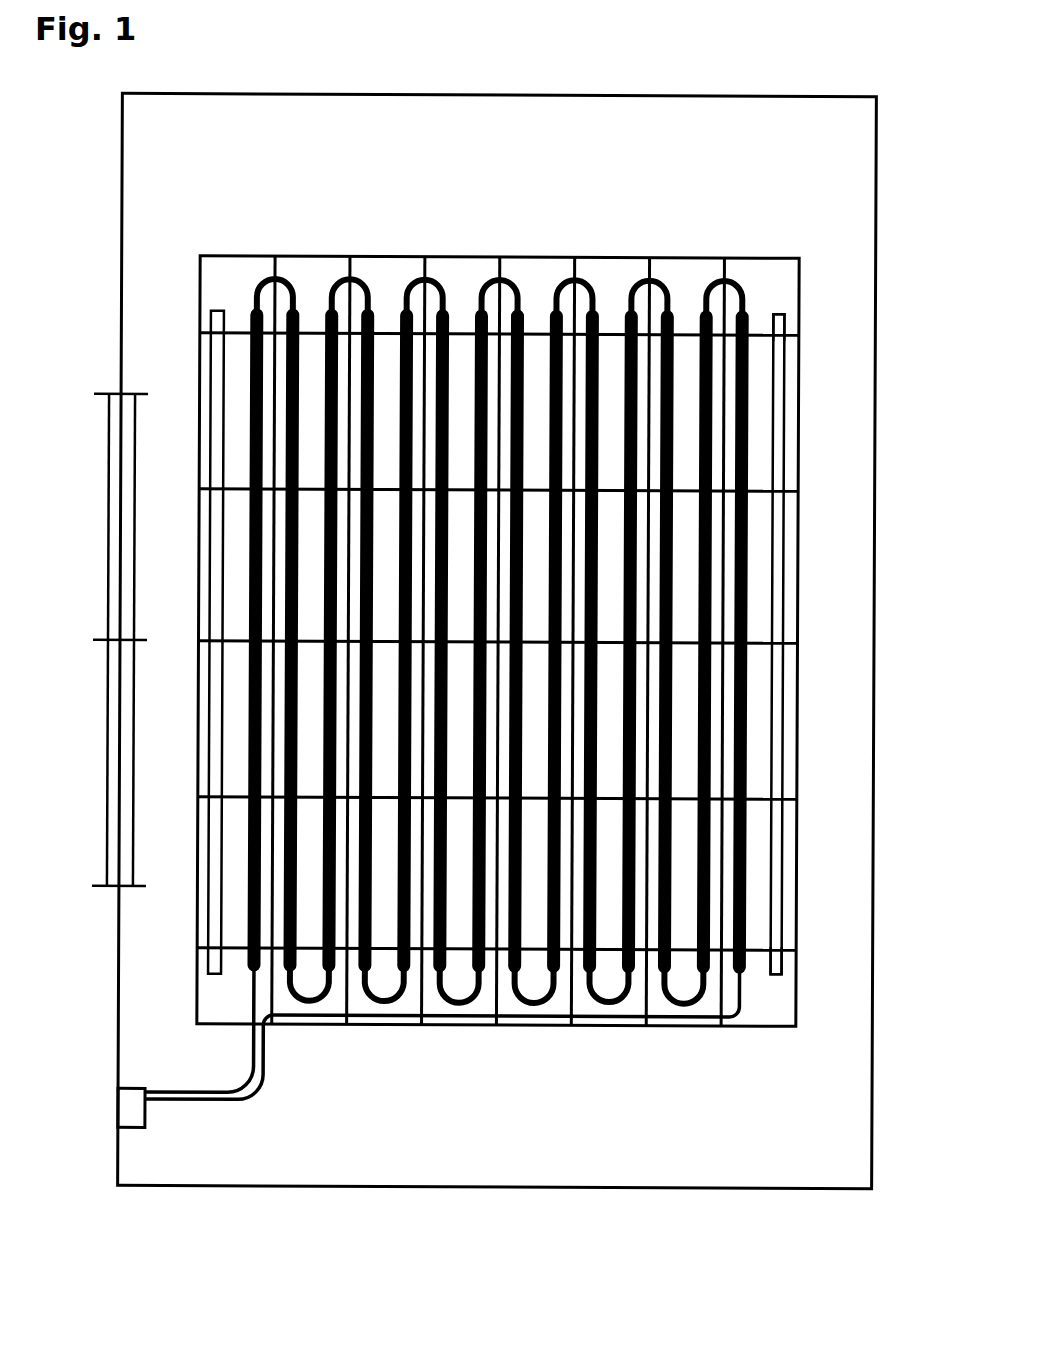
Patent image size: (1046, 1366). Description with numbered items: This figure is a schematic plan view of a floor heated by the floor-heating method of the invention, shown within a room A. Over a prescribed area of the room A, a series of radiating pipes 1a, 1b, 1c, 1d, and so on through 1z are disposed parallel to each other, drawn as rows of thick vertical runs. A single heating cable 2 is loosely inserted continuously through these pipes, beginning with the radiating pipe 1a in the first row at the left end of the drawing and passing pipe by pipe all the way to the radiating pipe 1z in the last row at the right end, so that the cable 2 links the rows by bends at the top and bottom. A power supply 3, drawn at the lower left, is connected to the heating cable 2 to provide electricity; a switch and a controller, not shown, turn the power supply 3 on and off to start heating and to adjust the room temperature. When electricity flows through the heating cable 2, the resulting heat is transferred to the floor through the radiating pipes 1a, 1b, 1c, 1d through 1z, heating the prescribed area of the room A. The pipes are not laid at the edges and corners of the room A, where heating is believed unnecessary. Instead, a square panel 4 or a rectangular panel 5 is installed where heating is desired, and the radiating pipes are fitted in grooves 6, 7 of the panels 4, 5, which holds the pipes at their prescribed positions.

The room A is at (858, 190).
The radiating pipe 1a is at (250, 330).
The radiating pipe 1b is at (303, 328).
The radiating pipe 1c is at (310, 330).
The radiating pipe 1d is at (375, 328).
The radiating pipe 1z is at (747, 726).
The heating cable 2 is at (507, 280).
The power supply 3 is at (130, 1118).
The square panel 4 is at (793, 294).
The rectangular panel 5 is at (795, 433).
The groove 6 is at (785, 322).
The groove 7 is at (787, 471).